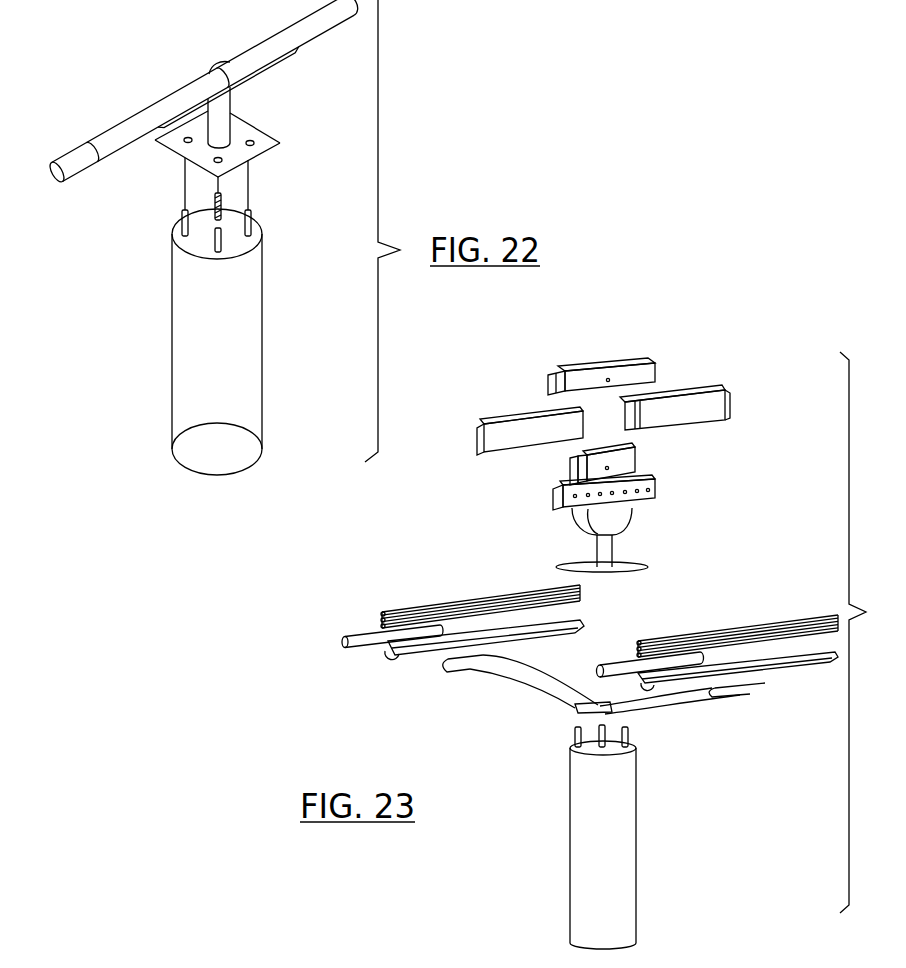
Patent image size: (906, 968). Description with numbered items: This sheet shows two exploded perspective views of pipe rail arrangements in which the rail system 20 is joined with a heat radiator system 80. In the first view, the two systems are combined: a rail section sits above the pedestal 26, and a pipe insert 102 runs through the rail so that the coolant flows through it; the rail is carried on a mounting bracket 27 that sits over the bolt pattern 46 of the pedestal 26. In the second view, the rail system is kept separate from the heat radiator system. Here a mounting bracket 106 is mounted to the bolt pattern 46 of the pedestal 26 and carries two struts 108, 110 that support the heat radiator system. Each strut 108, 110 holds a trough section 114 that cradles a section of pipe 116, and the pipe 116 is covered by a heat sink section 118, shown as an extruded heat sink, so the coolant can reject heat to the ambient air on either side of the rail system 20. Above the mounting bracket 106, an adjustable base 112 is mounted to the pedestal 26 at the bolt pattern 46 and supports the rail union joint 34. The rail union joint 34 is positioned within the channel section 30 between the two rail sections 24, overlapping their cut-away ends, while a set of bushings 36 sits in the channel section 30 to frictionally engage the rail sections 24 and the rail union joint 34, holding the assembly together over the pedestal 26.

In FIG. 22, the rail system 20 is at (303, 49).
In FIG. 23, the rail section 24 is at (512, 420).
In FIG. 22, the pedestal 26 is at (259, 308).
In FIG. 23, the pedestal 26 is at (637, 847).
In FIG. 22, the mounting bracket 27 is at (273, 135).
In FIG. 23, the channel section 30 is at (657, 490).
In FIG. 23, the rail union joint 34 is at (638, 462).
In FIG. 23, the bushing 36 is at (656, 366).
In FIG. 22, the bolt pattern 46 is at (250, 213).
In FIG. 23, the bolt pattern 46 is at (632, 735).
In FIG. 22, the heat radiator system 80 is at (168, 54).
In FIG. 22, the pipe insert 102 is at (80, 172).
In FIG. 23, the mounting bracket 106 is at (578, 710).
In FIG. 23, the strut 108 is at (457, 672).
In FIG. 23, the strut 110 is at (737, 695).
In FIG. 23, the adjustable base 112 is at (632, 518).
In FIG. 23, the trough section 114 is at (393, 658).
In FIG. 23, the pipe 116 is at (357, 633).
In FIG. 23, the heat sink section 118 is at (453, 600).